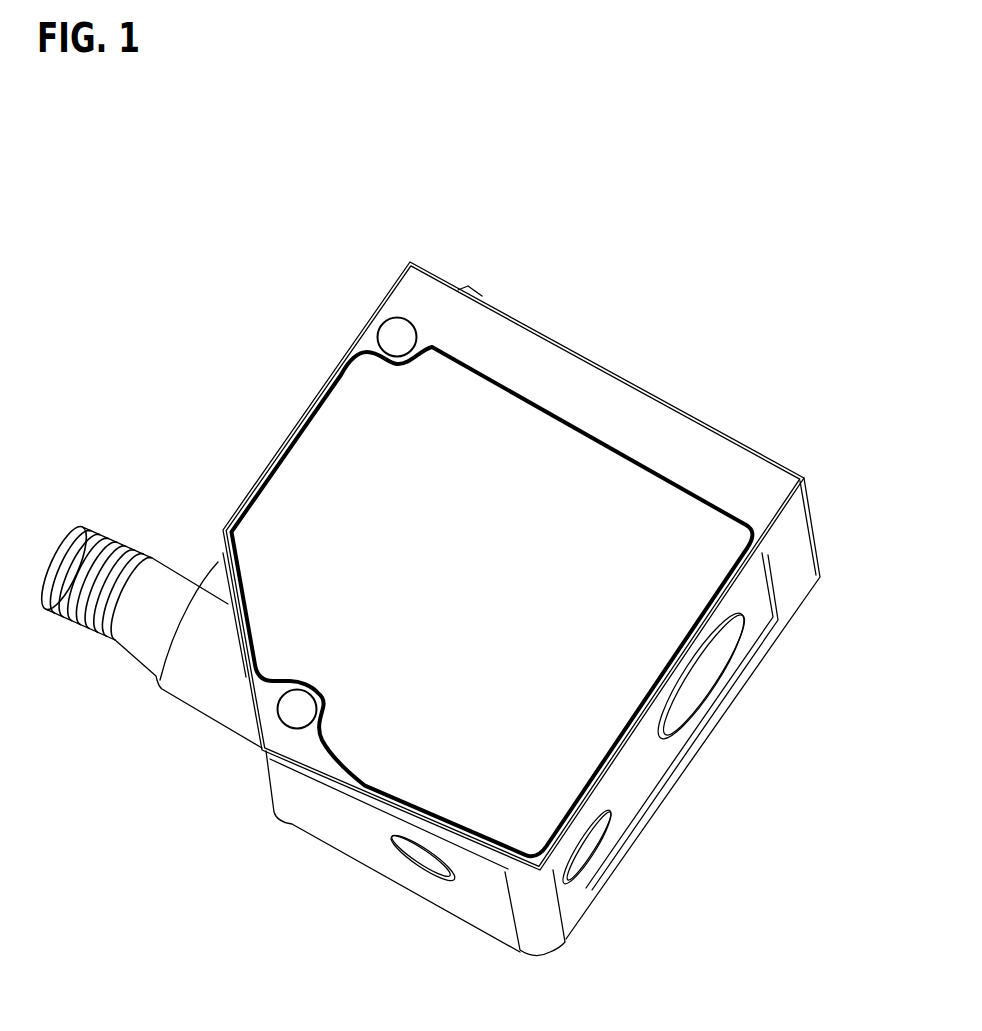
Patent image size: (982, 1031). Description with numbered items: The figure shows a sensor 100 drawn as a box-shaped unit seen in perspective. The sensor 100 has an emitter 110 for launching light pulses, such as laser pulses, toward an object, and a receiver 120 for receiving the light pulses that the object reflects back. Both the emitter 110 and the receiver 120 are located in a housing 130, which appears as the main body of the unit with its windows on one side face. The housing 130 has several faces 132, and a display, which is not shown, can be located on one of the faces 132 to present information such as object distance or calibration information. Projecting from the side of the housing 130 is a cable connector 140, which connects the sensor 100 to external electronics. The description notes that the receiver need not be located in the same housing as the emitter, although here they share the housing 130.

The sensor 100 is at (580, 197).
The emitter 110 is at (580, 838).
The receiver 120 is at (697, 677).
The housing 130 is at (697, 450).
The face of the housing 132 is at (608, 367).
The cable connector 140 is at (125, 540).